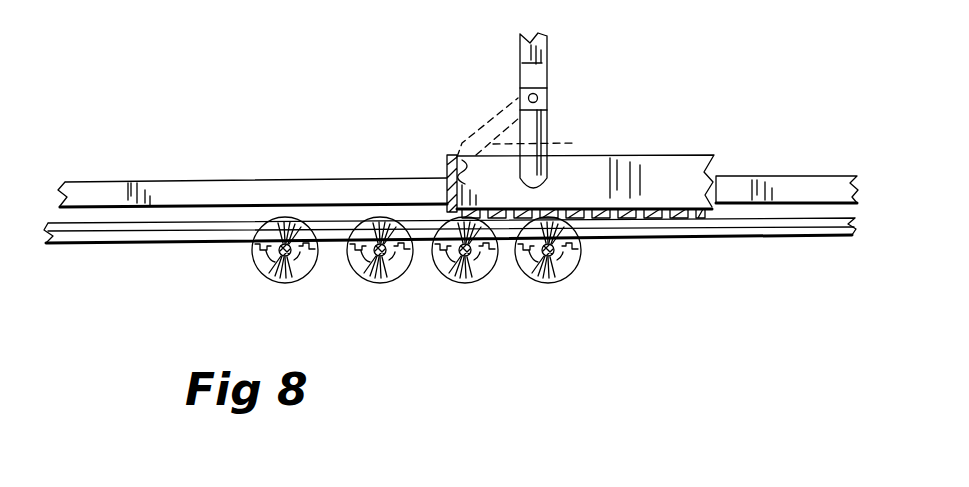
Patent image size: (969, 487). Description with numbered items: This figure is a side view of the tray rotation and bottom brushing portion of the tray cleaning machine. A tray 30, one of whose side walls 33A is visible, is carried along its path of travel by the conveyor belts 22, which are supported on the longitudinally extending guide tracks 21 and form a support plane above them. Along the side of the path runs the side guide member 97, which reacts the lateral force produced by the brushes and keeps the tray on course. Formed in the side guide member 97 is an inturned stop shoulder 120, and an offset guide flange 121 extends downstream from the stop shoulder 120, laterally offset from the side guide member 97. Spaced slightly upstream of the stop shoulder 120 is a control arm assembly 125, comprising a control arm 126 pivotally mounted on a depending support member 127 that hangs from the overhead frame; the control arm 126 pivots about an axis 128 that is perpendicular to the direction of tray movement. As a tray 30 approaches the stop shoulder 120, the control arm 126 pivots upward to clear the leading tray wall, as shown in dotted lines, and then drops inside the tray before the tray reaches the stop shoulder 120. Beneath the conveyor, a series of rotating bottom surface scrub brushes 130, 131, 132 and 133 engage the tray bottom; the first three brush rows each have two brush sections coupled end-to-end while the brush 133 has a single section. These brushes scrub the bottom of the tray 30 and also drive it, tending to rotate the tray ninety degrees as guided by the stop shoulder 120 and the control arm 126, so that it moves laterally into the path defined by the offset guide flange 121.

The guide track 21 is at (672, 239).
The conveyor belt 22 is at (704, 226).
The tray 30 is at (713, 160).
The side wall 33A is at (663, 160).
The side guide member 97 is at (772, 188).
The stop shoulder 120 is at (447, 160).
The offset guide flange 121 is at (250, 188).
The control arm assembly 125 is at (497, 103).
The control arm 126 is at (563, 126).
The depending support member 127 is at (537, 54).
The pivot axis 128 is at (546, 97).
The bottom surface scrub brush 130 is at (545, 283).
The bottom surface scrub brush 131 is at (460, 283).
The bottom surface scrub brush 132 is at (375, 283).
The bottom surface scrub brush 133 is at (280, 283).